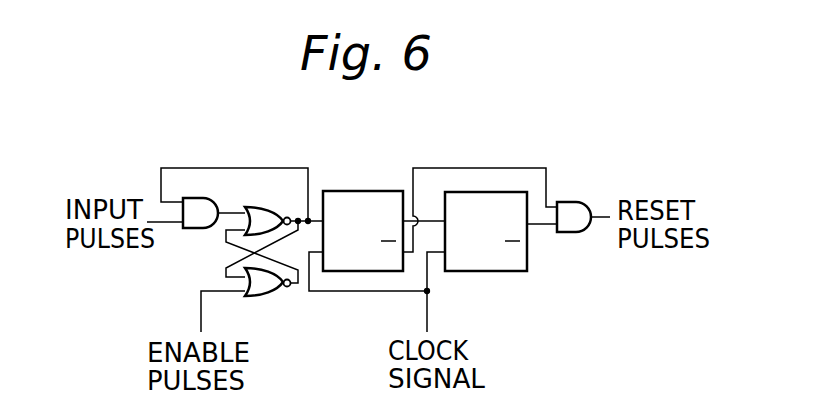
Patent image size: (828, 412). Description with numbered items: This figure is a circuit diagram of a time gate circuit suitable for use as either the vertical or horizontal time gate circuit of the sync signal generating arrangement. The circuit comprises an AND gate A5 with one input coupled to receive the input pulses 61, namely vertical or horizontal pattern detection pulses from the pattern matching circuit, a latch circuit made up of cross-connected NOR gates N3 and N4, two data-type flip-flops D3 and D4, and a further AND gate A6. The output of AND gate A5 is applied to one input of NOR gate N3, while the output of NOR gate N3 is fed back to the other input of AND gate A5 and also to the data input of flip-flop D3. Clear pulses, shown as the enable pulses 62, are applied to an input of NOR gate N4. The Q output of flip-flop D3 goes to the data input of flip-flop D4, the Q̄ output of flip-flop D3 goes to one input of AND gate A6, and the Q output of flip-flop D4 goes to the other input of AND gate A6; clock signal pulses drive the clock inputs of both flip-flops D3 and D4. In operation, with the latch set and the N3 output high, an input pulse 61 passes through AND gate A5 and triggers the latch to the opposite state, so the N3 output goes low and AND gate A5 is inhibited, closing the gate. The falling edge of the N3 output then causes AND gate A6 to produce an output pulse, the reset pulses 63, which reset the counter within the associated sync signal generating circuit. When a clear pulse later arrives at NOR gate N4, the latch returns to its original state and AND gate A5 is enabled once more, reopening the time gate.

The input pulse 61 is at (171, 225).
The enable pulses line 62 is at (201, 300).
The reset pulses output line 63 is at (606, 214).
The AND gate A5 is at (199, 198).
The AND gate A6 is at (575, 201).
The NOR gate N3 is at (264, 207).
The NOR gate N4 is at (265, 293).
The data-type flip-flop D3 is at (367, 190).
The data-type flip-flop D4 is at (497, 272).